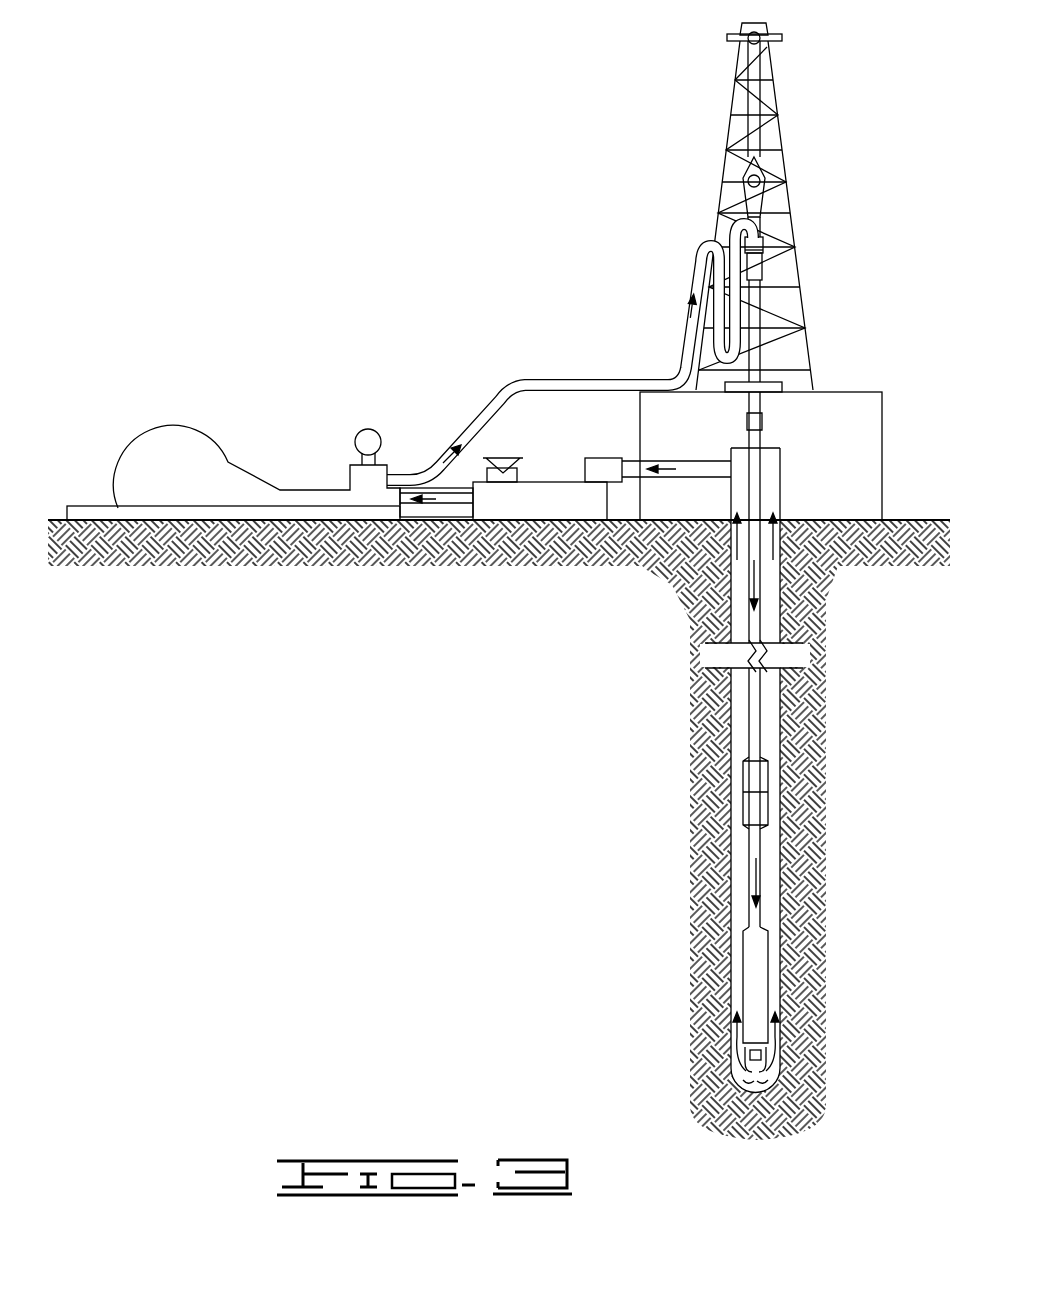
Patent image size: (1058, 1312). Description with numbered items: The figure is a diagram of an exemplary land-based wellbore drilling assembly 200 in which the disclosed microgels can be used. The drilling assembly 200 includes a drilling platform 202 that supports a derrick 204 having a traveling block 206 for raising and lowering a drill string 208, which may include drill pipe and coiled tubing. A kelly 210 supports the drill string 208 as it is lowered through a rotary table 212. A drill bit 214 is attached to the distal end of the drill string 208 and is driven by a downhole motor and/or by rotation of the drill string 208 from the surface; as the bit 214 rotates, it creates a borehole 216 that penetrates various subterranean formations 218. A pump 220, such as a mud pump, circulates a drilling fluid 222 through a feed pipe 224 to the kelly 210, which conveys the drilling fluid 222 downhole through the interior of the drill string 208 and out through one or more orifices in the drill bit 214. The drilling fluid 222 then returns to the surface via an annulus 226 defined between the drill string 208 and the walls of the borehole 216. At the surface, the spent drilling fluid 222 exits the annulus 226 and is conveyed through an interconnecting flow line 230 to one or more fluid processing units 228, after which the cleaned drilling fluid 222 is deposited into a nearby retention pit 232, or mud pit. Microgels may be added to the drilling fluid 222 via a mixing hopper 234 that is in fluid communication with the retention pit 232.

The wellbore drilling assembly 200 is at (466, 100).
The drilling platform 202 is at (882, 400).
The derrick 204 is at (782, 130).
The traveling block 206 is at (763, 173).
The drill string 208 is at (757, 625).
The kelly 210 is at (752, 295).
The rotary table 212 is at (775, 380).
The drill bit 214 is at (780, 1080).
The borehole 216 is at (783, 730).
The subterranean formations 218 is at (616, 754).
The pump 220 is at (189, 482).
The drilling fluid 222 is at (415, 477).
The feed pipe 224 is at (575, 378).
The annulus 226 is at (772, 878).
The fluid processing unit 228 is at (607, 470).
The interconnecting flow line 230 is at (708, 477).
The retention pit 232 is at (557, 503).
The mixing hopper 234 is at (508, 457).